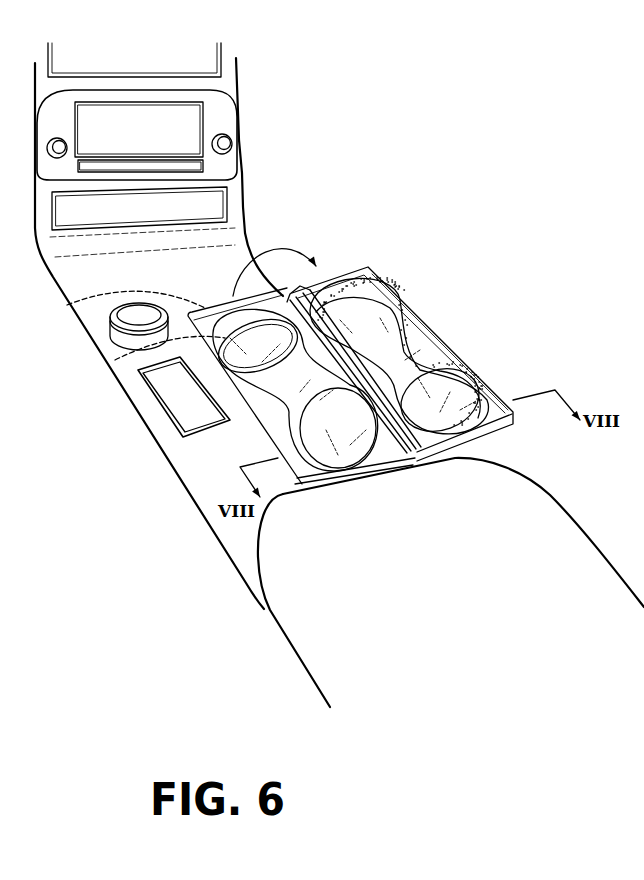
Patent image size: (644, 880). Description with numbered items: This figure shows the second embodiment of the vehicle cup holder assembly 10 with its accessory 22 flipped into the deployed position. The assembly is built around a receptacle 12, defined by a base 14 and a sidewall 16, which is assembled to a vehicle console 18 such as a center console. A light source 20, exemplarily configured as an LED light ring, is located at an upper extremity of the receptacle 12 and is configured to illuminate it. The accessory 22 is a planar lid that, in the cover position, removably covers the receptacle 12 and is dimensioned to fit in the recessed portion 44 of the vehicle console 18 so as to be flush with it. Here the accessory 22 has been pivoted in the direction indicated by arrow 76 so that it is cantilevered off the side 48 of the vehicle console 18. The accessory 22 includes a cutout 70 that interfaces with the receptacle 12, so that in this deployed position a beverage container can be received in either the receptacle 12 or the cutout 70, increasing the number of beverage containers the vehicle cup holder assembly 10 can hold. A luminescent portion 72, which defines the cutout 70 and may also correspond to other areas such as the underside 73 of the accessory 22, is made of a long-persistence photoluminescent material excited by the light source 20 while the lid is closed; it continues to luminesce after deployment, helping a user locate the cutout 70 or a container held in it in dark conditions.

The vehicle cup holder assembly 10 is at (463, 285).
The receptacle 12 is at (72, 303).
The base 14 is at (274, 347).
The sidewall 16 is at (303, 305).
The vehicle console 18 is at (155, 413).
The light source 20 is at (310, 293).
The accessory 22 is at (457, 349).
The recessed portion 44 is at (115, 360).
The side 48 is at (438, 448).
The cutout 70 is at (365, 342).
The luminescent portion 72 is at (380, 280).
The underside 73 is at (460, 363).
The arrow 76 is at (268, 247).